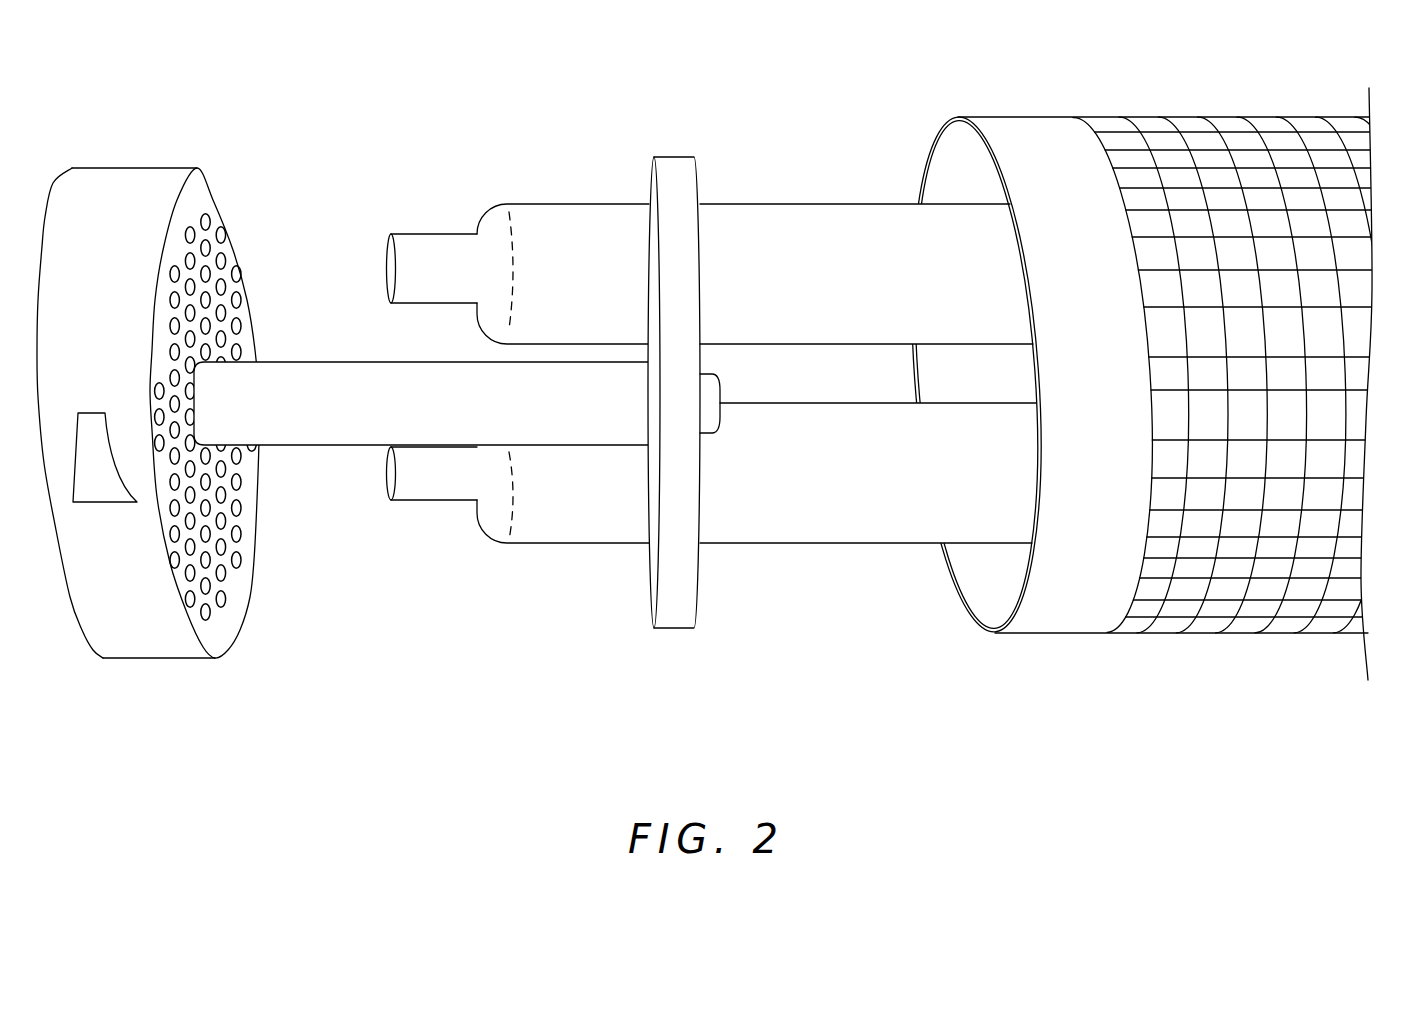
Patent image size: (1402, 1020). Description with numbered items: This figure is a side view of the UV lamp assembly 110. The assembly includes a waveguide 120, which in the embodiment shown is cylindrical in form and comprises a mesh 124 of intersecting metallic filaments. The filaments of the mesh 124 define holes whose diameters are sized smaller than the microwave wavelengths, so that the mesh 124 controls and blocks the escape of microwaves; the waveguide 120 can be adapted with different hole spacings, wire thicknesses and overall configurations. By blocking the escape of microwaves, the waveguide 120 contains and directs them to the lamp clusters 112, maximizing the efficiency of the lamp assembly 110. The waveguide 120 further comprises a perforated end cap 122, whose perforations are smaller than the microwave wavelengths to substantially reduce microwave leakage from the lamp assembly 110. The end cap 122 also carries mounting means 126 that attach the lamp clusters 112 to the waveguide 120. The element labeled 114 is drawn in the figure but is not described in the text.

The lamp assembly 110 is at (608, 91).
The lamp clusters 112 is at (558, 543).
The sensor cylinders 114 is at (773, 440).
The waveguide 120 is at (1047, 635).
The end cap 122 is at (111, 186).
The mesh 124 is at (1167, 635).
The mounting means 126 is at (677, 630).